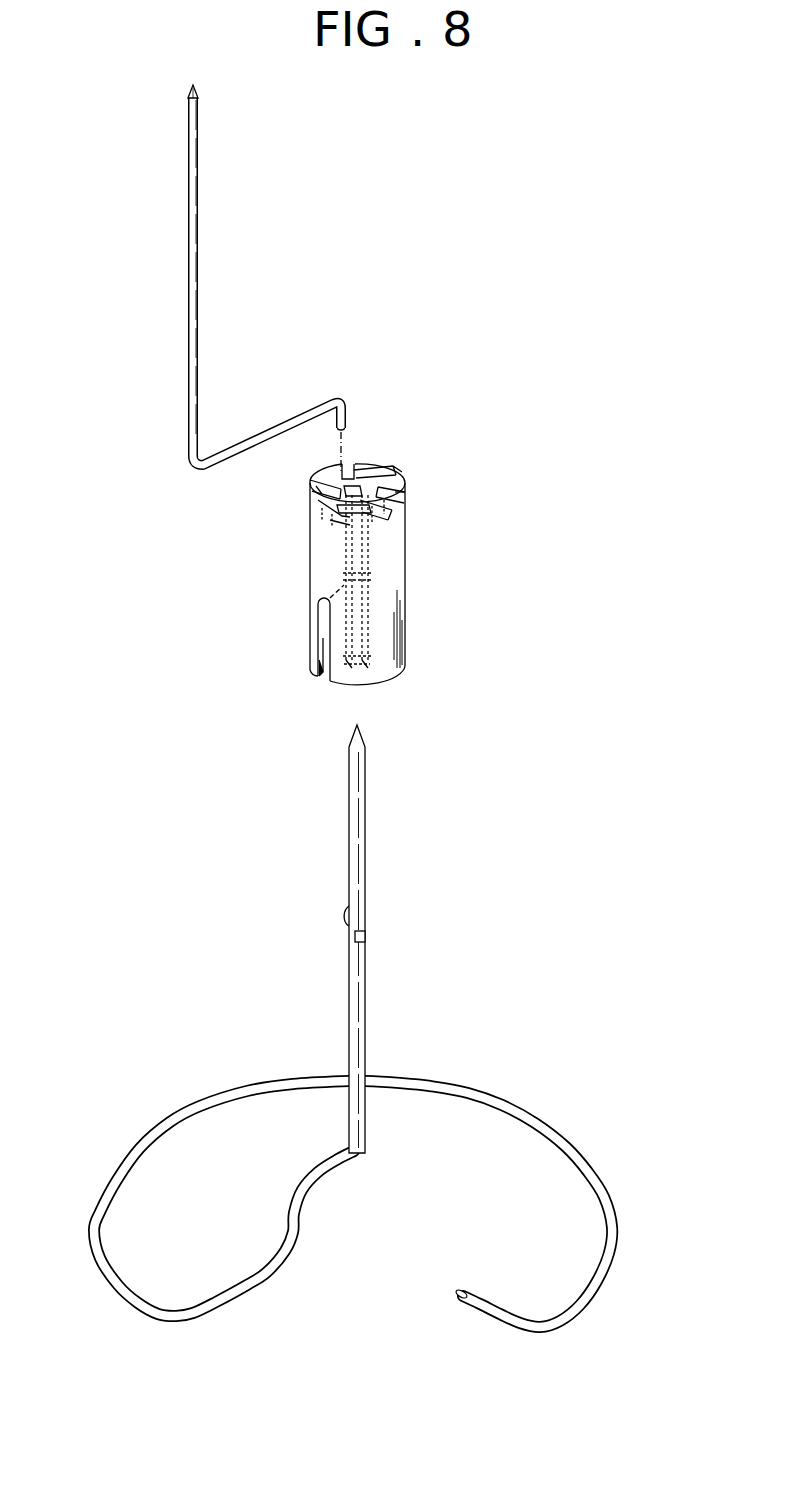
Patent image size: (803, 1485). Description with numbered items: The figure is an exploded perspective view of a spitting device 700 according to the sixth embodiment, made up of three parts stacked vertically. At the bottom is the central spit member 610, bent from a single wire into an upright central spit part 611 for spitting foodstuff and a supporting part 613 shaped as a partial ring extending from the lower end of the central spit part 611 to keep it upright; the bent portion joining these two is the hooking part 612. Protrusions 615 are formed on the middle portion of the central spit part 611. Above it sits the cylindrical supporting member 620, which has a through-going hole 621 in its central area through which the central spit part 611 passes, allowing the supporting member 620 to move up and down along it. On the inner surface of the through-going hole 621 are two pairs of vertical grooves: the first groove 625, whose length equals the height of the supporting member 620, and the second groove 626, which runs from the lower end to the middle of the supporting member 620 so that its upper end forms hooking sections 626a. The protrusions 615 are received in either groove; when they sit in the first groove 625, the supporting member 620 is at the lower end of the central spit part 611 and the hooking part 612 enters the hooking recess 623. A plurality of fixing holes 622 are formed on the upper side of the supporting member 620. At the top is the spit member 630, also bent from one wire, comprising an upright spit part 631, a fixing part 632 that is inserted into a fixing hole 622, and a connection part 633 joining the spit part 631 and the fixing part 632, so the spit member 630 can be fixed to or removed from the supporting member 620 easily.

The spitting device 700 is at (578, 313).
The spit member 630 is at (238, 207).
The spit part 631 is at (188, 140).
The fixing part 632 is at (345, 410).
The connection part 633 is at (252, 442).
The supporting member 620 is at (443, 586).
The through-going hole 621 is at (368, 470).
The fixing holes 622 is at (320, 490).
The hooking recess 623 is at (318, 612).
The first groove 625 is at (405, 492).
The second groove 626 is at (343, 641).
The hooking sections 626a is at (340, 578).
The central spit member 610 is at (549, 990).
The central spit part 611 is at (349, 816).
The hooking part 612 is at (316, 1190).
The supporting part 613 is at (590, 1158).
The protrusions 615 is at (349, 926).